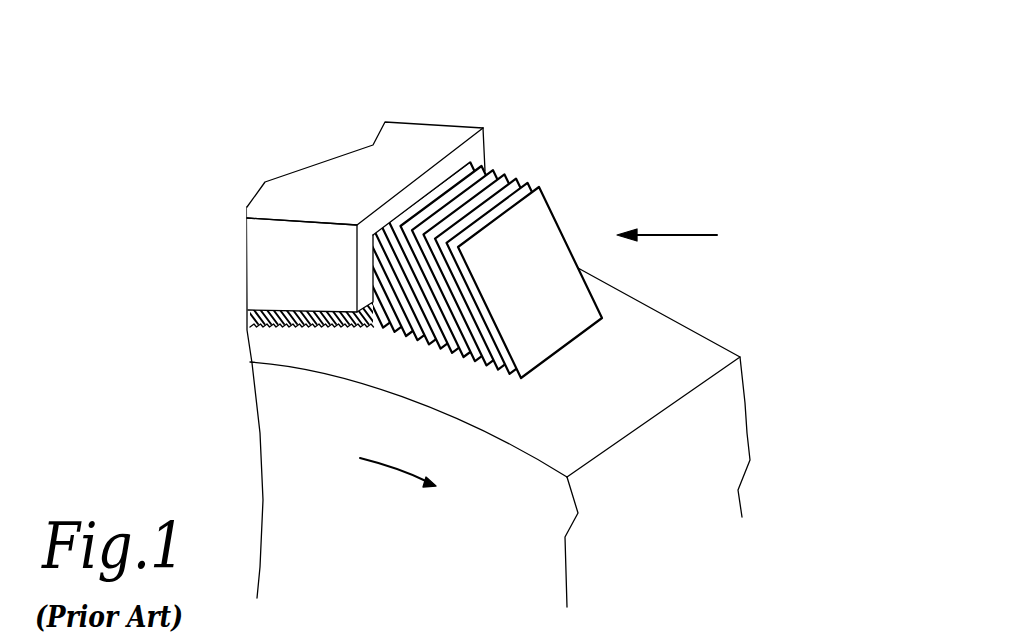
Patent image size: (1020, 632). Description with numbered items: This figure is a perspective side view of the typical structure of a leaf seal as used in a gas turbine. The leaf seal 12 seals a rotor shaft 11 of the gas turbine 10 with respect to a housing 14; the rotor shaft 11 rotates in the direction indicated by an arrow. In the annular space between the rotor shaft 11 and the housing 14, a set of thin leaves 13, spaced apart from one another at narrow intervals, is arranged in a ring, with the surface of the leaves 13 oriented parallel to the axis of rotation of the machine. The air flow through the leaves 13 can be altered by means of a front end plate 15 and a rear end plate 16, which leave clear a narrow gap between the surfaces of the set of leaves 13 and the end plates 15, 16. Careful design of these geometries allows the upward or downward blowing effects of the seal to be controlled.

The gas turbine 10 is at (714, 176).
The rotor shaft 11 is at (523, 539).
The leaf seal 12 is at (704, 231).
The leaves 13 is at (532, 233).
The housing 14 is at (295, 202).
The front end plate 15 is at (263, 280).
The rear end plate 16 is at (487, 157).